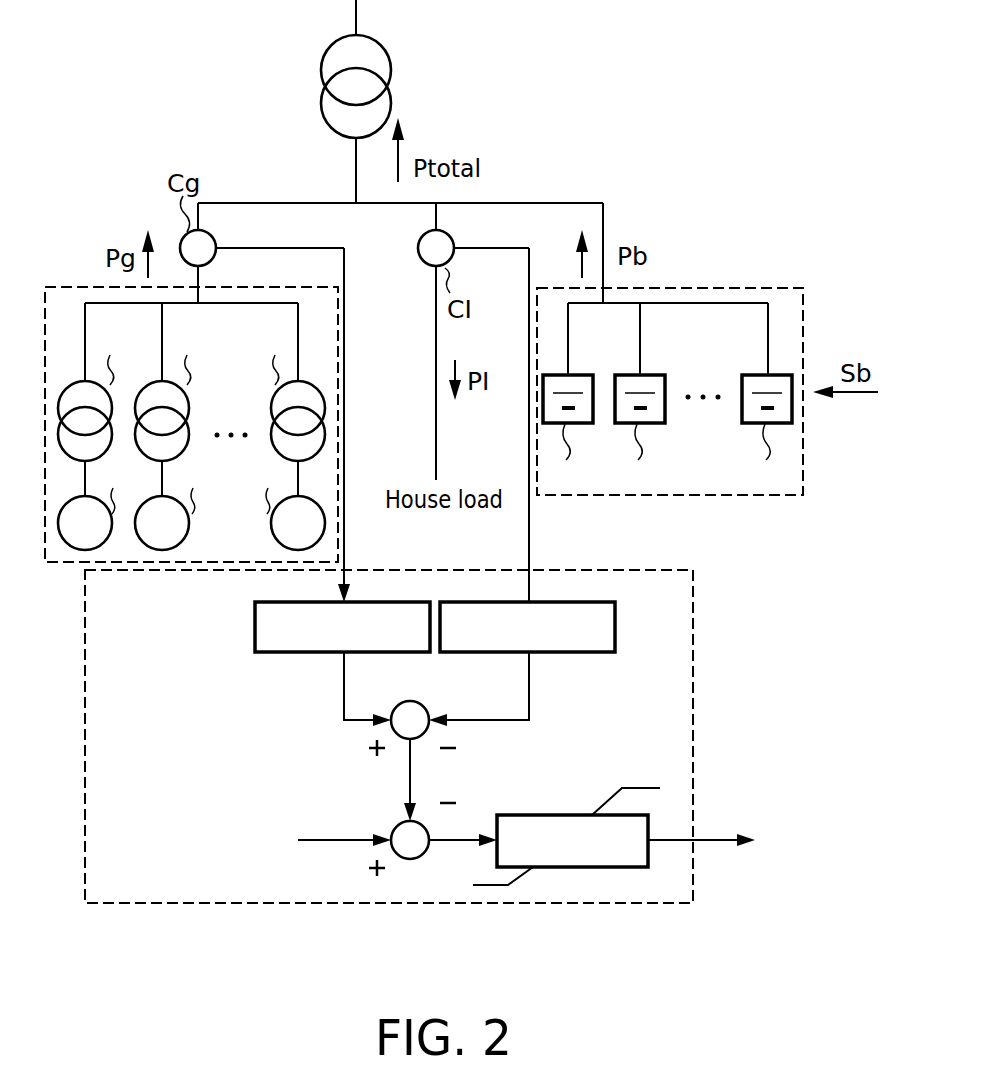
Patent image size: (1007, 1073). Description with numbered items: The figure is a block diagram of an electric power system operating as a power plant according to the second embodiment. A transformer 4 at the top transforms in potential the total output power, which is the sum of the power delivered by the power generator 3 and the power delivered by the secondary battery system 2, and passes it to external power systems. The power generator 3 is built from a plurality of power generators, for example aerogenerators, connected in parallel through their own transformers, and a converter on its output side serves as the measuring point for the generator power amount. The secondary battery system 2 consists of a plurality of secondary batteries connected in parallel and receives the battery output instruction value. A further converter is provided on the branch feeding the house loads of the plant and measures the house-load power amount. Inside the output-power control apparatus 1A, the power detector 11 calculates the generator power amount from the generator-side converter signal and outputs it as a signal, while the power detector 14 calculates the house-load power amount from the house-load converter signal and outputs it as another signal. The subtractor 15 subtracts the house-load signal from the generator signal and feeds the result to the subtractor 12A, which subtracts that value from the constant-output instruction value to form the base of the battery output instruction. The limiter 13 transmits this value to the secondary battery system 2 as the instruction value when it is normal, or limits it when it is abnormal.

The transformer 4 is at (391, 60).
The power generator 3 is at (73, 287).
The secondary battery system 2 is at (760, 288).
The output-power control apparatus 1A is at (693, 633).
The power detector 11 is at (255, 628).
The power detector 14 is at (577, 655).
The subtractor 15 is at (424, 707).
The subtractor 12A is at (394, 827).
The limiter 13 is at (532, 815).